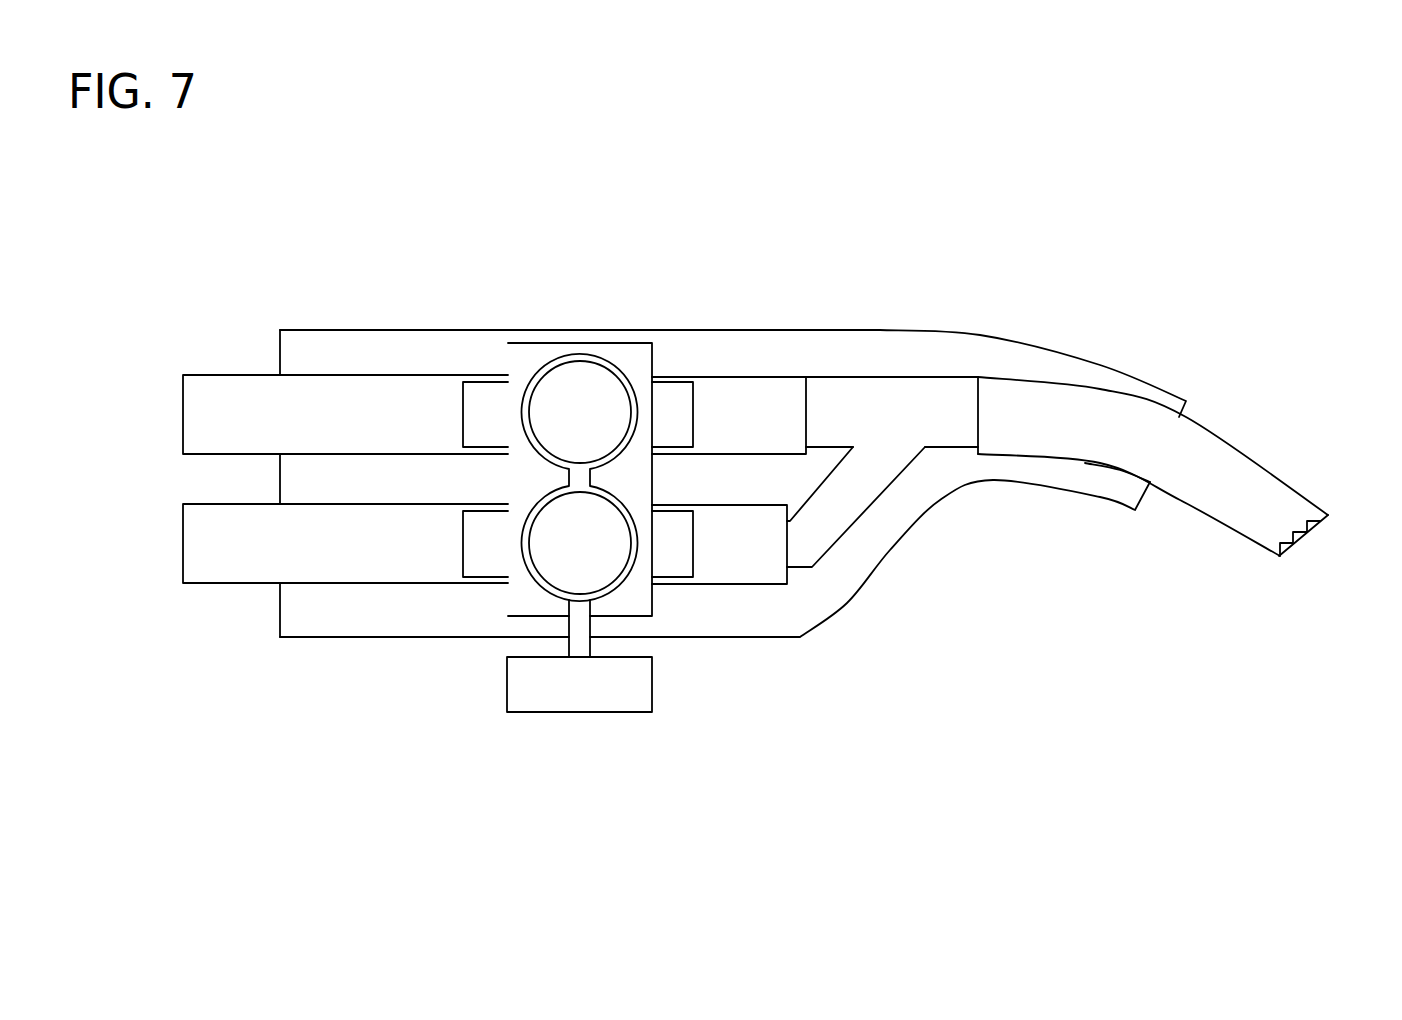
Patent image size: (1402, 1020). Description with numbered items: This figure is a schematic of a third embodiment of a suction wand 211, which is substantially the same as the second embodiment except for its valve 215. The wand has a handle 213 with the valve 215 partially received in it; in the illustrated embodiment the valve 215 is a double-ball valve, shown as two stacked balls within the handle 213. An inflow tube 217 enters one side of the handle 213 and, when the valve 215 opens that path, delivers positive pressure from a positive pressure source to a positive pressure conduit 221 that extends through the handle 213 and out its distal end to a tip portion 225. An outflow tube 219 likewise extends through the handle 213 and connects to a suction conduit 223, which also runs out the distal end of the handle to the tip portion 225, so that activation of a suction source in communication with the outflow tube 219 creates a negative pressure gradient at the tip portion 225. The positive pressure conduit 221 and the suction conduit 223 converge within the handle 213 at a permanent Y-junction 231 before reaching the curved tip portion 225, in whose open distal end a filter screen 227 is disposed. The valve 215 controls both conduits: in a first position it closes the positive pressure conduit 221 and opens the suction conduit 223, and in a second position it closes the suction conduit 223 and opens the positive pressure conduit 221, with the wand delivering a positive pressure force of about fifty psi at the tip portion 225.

The suction wand 211 is at (1139, 212).
The handle 213 is at (390, 350).
The valve 215 is at (529, 720).
The inflow tube 217 is at (225, 398).
The outflow tube 219 is at (223, 565).
The positive pressure conduit 221 is at (847, 402).
The suction conduit 223 is at (845, 505).
The tip portion 225 is at (1252, 482).
The filter screen 227 is at (1298, 540).
The Y-junction 231 is at (900, 412).